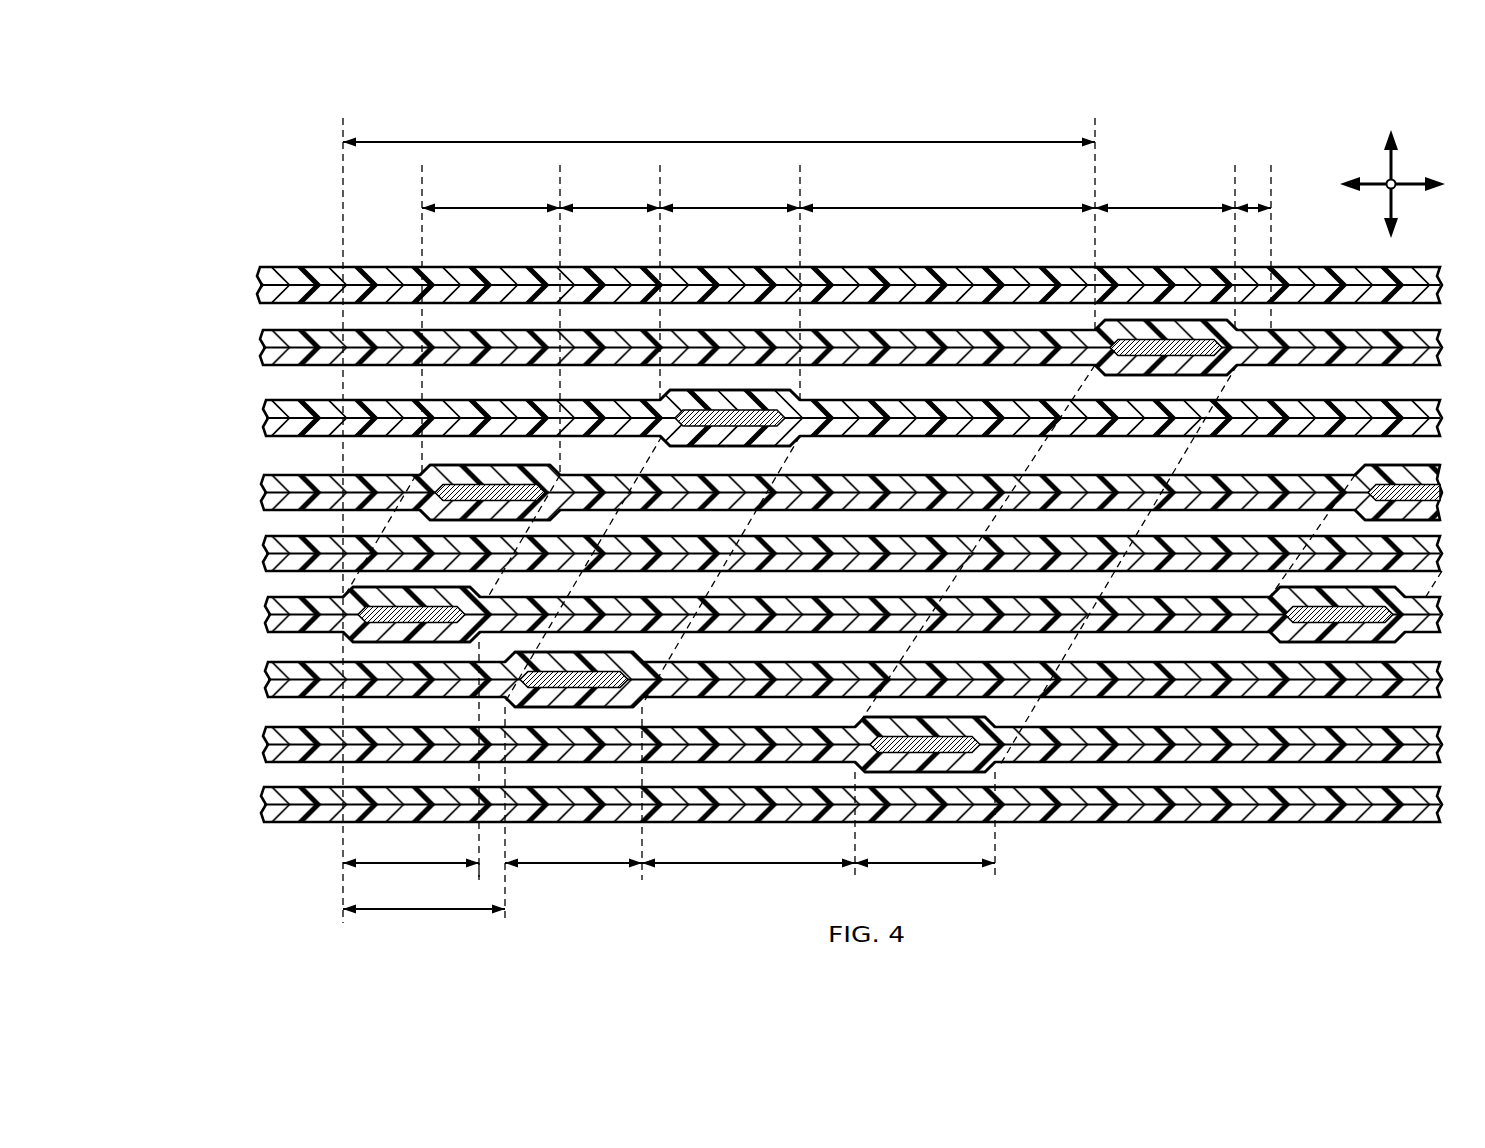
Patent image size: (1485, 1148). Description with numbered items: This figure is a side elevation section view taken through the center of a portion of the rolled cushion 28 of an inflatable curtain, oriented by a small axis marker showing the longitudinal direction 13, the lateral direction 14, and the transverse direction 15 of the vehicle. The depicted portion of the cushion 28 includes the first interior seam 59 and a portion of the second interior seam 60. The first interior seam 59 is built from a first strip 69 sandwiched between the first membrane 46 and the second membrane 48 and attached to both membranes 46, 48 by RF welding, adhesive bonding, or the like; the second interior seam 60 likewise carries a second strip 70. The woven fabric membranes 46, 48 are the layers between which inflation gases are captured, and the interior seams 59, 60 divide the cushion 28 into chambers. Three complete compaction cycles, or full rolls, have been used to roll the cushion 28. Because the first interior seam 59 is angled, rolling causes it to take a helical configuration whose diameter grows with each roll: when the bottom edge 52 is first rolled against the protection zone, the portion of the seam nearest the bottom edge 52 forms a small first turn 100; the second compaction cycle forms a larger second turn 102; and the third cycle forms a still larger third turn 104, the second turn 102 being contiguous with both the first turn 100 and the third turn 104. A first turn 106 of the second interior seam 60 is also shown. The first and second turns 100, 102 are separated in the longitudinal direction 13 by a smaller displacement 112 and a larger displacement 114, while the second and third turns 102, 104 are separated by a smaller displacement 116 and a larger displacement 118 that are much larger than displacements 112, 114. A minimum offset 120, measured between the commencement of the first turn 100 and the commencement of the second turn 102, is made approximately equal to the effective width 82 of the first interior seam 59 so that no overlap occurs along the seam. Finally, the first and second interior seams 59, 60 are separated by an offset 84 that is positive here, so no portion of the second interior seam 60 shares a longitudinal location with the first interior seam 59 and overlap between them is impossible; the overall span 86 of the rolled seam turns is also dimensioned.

The cushion 28 is at (255, 240).
The first membrane 46 is at (262, 276).
The second membrane 48 is at (262, 294).
The bottom edge 52 is at (268, 554).
The first interior seam 59 is at (417, 468).
The second interior seam 60 is at (1348, 468).
The first strip 69 is at (498, 489).
The second strip 70 is at (1428, 488).
The effective width 82 is at (480, 208).
The offset 84 is at (1257, 205).
The overall pad span 86 is at (725, 142).
The first turn 100 is at (501, 579).
The second turn 102 is at (712, 579).
The third turn 104 is at (1072, 639).
The first turn of the second interior seam 106 is at (1320, 524).
The smaller displacement 112 is at (492, 863).
The larger displacement 114 is at (602, 208).
The smaller displacement 116 is at (747, 863).
The larger displacement 118 is at (965, 208).
The minimum offset 120 is at (422, 909).
The longitudinal direction 13 is at (1410, 186).
The lateral direction 14 is at (1388, 180).
The transverse direction 15 is at (1393, 153).